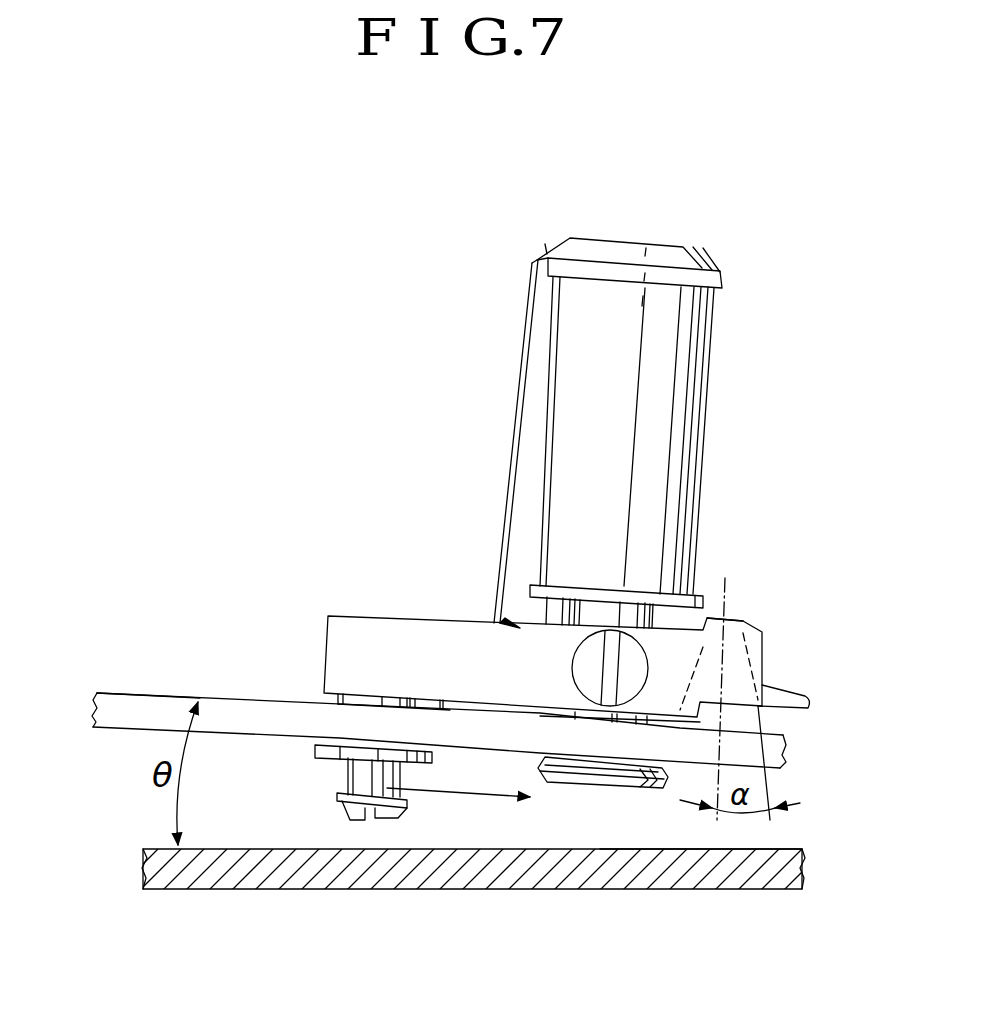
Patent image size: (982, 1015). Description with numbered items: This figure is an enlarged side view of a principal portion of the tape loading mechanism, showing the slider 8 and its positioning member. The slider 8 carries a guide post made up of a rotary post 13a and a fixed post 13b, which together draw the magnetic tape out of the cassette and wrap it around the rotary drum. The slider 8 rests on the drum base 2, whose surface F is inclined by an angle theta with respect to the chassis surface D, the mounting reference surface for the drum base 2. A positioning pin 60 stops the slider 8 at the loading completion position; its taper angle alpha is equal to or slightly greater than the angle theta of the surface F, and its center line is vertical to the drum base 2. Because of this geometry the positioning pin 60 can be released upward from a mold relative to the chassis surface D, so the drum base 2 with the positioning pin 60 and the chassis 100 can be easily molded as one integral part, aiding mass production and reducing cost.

The drum base 2 is at (245, 720).
The slider 8 is at (407, 640).
The rotary post 13a is at (663, 403).
The fixed post 13b is at (533, 412).
The positioning pin 60 is at (732, 623).
The chassis 100 is at (460, 867).
The chassis surface D is at (745, 848).
The inclined surface F is at (140, 695).